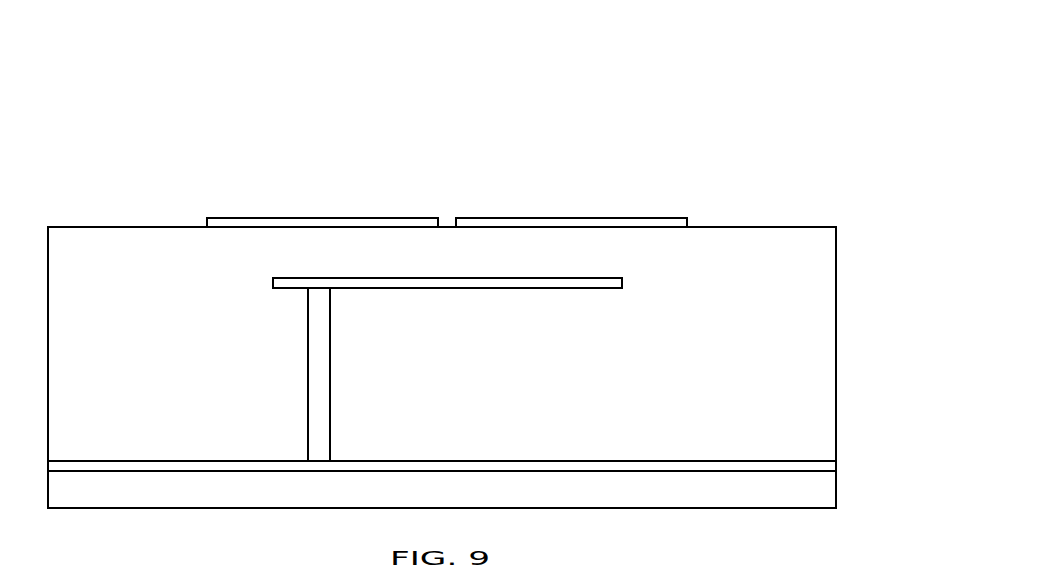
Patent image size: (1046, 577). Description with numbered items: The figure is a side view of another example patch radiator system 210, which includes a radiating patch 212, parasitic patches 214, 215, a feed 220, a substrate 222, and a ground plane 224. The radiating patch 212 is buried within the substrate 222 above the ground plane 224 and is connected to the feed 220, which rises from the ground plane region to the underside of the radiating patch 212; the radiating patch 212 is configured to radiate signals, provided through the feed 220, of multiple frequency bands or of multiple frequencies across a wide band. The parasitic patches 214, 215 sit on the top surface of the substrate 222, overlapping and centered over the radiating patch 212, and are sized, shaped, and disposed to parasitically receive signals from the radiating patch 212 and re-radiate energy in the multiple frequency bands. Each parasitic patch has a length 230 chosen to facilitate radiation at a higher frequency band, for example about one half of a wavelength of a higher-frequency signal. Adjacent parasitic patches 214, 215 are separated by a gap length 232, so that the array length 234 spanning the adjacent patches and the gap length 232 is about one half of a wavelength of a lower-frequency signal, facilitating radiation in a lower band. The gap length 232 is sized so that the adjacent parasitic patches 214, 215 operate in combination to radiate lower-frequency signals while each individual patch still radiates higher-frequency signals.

The patch radiator system 210 is at (705, 124).
The radiating patch 212 is at (622, 282).
The parasitic patch 214 is at (345, 216).
The parasitic patch 215 is at (548, 216).
The feed 220 is at (330, 329).
The substrate 222 is at (767, 227).
The ground plane 224 is at (193, 459).
The length 230 is at (437, 216).
The gap length 232 is at (390, 152).
The array length 234 is at (686, 216).